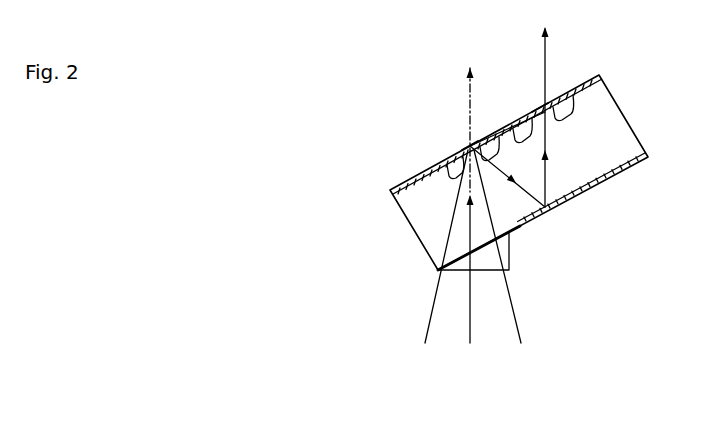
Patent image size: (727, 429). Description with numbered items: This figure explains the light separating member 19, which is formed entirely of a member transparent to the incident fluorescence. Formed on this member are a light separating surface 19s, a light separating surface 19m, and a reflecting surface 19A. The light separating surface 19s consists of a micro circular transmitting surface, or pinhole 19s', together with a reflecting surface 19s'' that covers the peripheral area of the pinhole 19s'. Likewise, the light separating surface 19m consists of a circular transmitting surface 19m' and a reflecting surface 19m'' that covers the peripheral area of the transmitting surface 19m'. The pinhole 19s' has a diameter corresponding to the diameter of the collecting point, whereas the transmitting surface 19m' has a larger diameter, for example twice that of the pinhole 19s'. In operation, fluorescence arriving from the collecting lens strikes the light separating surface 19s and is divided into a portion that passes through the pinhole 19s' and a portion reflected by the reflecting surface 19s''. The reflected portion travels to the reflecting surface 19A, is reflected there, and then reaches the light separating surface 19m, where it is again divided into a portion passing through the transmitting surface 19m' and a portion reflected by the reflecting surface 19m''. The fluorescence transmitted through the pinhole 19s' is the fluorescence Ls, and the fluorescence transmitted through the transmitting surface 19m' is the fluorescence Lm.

The light separating member 19 is at (382, 230).
The light separating surface 19s is at (456, 186).
The micro circular transmitting surface (pinhole) 19s' is at (448, 129).
The reflecting surface 19s'' is at (411, 151).
The light separating surface 19m is at (537, 123).
The circular transmitting surface 19m' is at (515, 82).
The reflecting surface 19m'' is at (580, 76).
The reflecting surface 19A is at (586, 203).
The fluorescence Ls is at (473, 194).
The fluorescence Lm is at (512, 105).